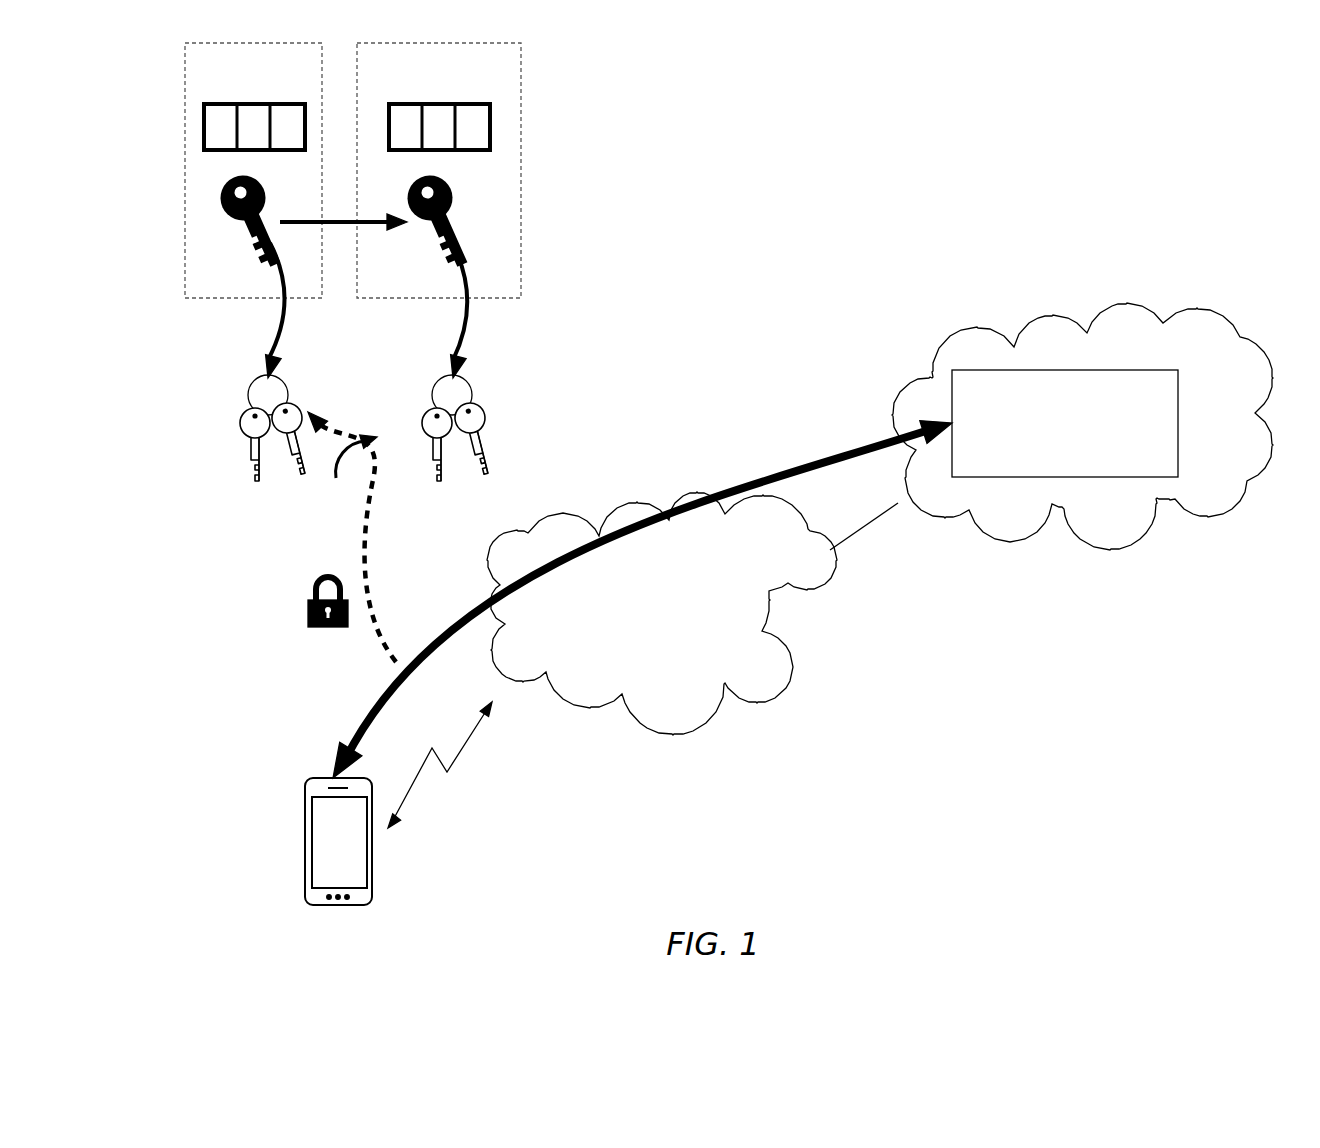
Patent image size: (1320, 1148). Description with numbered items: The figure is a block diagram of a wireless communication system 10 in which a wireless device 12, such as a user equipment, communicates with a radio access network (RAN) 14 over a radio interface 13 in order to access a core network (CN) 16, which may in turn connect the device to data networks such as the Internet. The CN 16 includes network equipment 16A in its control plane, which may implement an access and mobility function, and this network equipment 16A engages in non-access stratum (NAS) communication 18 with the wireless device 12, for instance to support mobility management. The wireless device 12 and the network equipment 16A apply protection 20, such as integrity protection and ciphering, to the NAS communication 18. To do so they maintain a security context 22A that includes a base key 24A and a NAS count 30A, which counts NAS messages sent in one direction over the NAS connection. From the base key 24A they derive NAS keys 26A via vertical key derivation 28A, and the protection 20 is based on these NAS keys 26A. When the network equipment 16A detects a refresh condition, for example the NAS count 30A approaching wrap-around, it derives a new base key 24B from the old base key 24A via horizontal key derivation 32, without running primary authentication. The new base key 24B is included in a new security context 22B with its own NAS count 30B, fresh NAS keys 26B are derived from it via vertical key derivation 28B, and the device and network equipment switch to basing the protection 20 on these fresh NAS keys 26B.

The wireless communication system 10 is at (775, 313).
The wireless device 12 is at (308, 903).
The radio interface 13 is at (412, 793).
The radio access network (RAN) 14 is at (662, 613).
The core network (CN) 16 is at (1082, 426).
The network equipment 16A is at (1065, 423).
The non-access stratum (NAS) communication 18 is at (453, 623).
The protection 20 is at (305, 610).
The security context 22A is at (253, 170).
The new security context 22B is at (439, 170).
The base key 24A is at (222, 216).
The new base key 24B is at (409, 216).
The NAS keys 26A is at (250, 395).
The fresh NAS keys 26B is at (472, 395).
The vertical key derivation 28A is at (280, 330).
The vertical key derivation 28B is at (463, 330).
The NAS count 30A is at (203, 112).
The NAS count 30B is at (491, 128).
The horizontal key derivation 32 is at (343, 214).